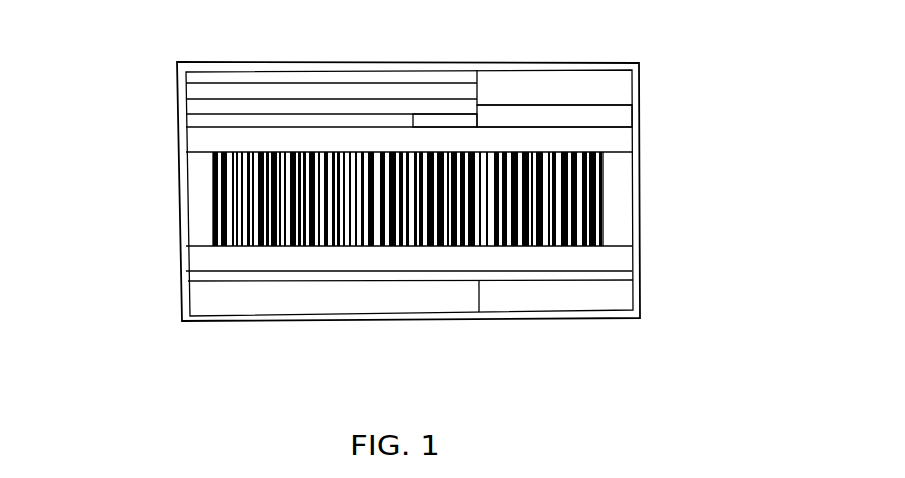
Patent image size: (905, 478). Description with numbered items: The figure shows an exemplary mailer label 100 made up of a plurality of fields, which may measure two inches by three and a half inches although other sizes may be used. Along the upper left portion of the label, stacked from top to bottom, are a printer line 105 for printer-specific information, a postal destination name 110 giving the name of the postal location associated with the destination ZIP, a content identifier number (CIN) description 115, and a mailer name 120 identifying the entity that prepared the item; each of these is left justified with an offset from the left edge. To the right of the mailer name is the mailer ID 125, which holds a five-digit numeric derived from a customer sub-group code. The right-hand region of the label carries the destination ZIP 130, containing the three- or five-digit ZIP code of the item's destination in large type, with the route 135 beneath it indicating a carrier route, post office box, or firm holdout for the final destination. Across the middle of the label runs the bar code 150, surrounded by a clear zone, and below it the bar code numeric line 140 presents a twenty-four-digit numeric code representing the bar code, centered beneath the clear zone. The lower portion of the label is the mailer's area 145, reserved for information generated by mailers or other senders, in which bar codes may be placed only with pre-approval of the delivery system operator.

The mailer label 100 is at (741, 55).
The printer line field 105 is at (197, 78).
The postal destination name field 110 is at (200, 91).
The CIN description field 115 is at (197, 106).
The mailer name field 120 is at (198, 124).
The mailer ID field 125 is at (420, 114).
The destination ZIP field 130 is at (530, 80).
The route field 135 is at (610, 115).
The bar code numeric line field 140 is at (200, 275).
The mailer's area 145 is at (207, 298).
The bar code 150 is at (573, 193).